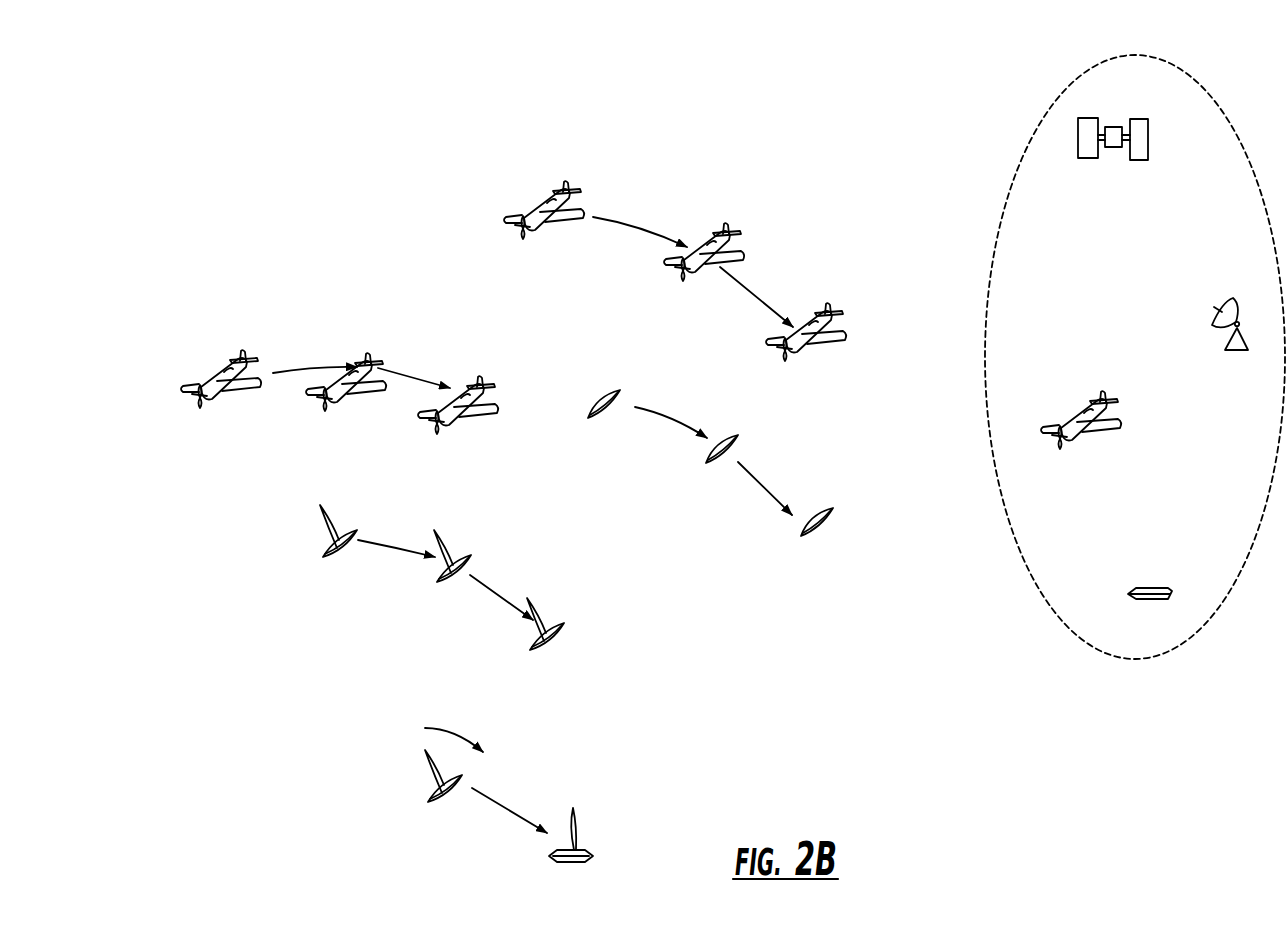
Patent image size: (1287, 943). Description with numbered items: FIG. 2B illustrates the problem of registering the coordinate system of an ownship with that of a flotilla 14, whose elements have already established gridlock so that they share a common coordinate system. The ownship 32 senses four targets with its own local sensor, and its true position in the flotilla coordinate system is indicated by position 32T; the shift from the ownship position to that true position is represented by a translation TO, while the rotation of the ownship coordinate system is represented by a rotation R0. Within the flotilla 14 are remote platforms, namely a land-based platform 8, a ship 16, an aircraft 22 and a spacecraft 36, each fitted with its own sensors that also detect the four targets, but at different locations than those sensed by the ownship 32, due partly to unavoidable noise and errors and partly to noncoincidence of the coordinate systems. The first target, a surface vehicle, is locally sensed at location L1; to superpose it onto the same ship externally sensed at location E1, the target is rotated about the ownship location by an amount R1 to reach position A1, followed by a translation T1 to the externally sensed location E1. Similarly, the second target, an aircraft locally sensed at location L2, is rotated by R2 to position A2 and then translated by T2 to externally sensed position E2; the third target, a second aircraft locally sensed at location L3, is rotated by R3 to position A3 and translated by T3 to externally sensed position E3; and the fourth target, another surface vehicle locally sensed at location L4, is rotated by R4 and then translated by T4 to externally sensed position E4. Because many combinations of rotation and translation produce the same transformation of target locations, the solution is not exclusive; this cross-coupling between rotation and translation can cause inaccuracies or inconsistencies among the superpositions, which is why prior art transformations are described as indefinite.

The locally sensed location of first target L1 is at (323, 548).
The rotation of first target R1 is at (393, 542).
The intermediate position of first target A1 is at (452, 538).
The translation of first target T1 is at (497, 588).
The externally sensed location of first target E1 is at (563, 625).
The locally sensed location of second target L2 is at (218, 373).
The rotation of second target R2 is at (292, 372).
The intermediate position of second target A2 is at (368, 355).
The translation of second target T2 is at (400, 371).
The externally sensed location of second target E2 is at (503, 407).
The locally sensed location of third target L3 is at (542, 200).
The rotation of third target R3 is at (637, 225).
The intermediate position of third target A3 is at (728, 223).
The translation of third target T3 is at (753, 287).
The externally sensed location of third target E3 is at (848, 335).
The locally sensed location of fourth target L4 is at (610, 392).
The rotation of fourth target R4 is at (677, 420).
The translation of fourth target T4 is at (763, 480).
The externally sensed location of fourth target E4 is at (827, 523).
The rotation of ownship coordinate system R0 is at (433, 727).
The ownship 32 is at (443, 800).
The translation of ownship position TO is at (509, 806).
The true position of ownship 32T is at (575, 865).
The flotilla 14 is at (1078, 637).
The spacecraft 36 is at (1115, 150).
The land-based platform 8 is at (1240, 305).
The aircraft 22 is at (1100, 430).
The ship 16 is at (1150, 590).